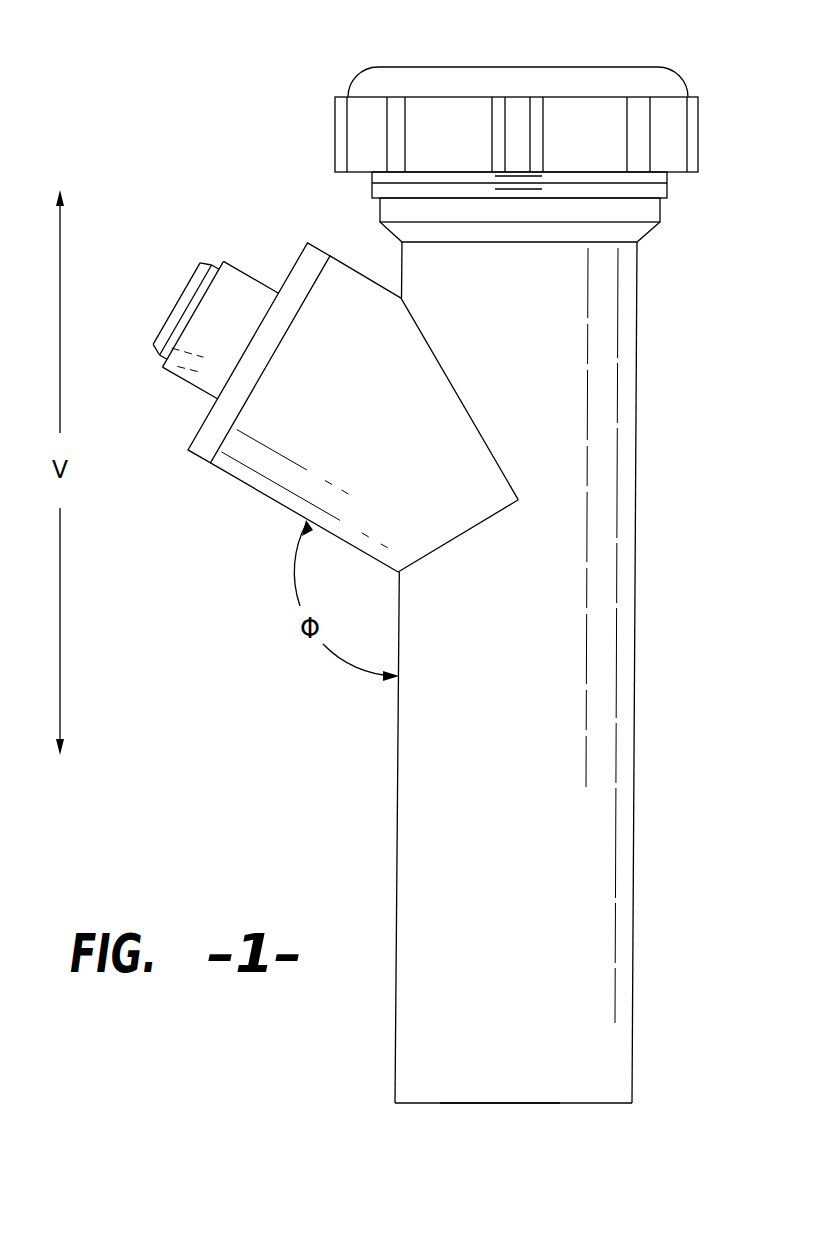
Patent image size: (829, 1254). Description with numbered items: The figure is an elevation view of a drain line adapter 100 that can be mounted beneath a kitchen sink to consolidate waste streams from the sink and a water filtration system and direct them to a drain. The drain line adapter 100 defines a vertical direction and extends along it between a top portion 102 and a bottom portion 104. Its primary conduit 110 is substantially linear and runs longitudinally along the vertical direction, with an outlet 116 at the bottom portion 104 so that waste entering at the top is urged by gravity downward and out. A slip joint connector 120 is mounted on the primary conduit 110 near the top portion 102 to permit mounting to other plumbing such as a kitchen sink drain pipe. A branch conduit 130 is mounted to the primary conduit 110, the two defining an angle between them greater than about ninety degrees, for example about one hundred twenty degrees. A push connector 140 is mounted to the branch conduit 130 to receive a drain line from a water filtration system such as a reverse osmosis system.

The drain line adapter 100 is at (406, 590).
The top portion 102 is at (314, 122).
The bottom portion 104 is at (332, 1094).
The primary conduit 110 is at (608, 475).
The outlet 116 is at (497, 1108).
The slip joint connector 120 is at (578, 110).
The branch conduit 130 is at (297, 438).
The push connector 140 is at (238, 385).